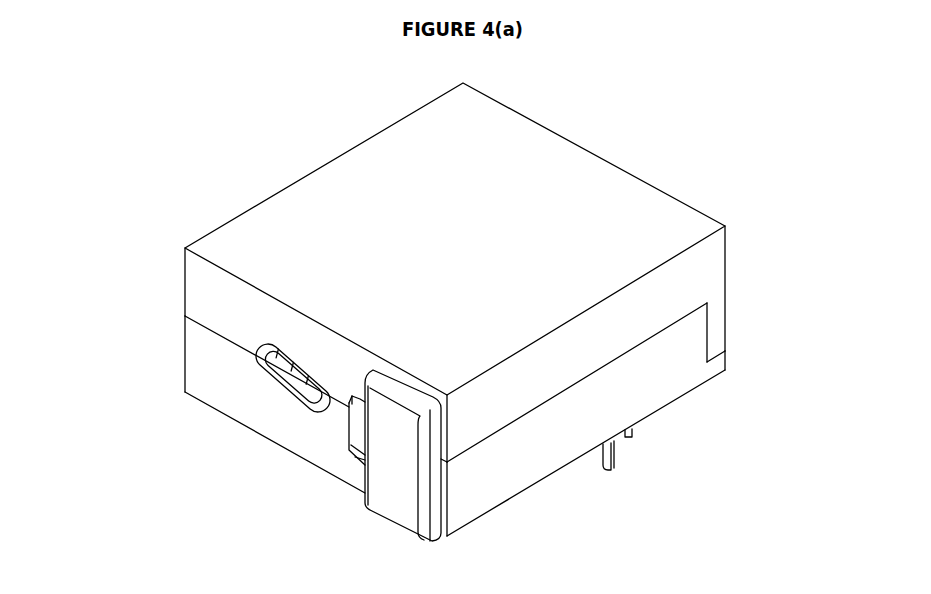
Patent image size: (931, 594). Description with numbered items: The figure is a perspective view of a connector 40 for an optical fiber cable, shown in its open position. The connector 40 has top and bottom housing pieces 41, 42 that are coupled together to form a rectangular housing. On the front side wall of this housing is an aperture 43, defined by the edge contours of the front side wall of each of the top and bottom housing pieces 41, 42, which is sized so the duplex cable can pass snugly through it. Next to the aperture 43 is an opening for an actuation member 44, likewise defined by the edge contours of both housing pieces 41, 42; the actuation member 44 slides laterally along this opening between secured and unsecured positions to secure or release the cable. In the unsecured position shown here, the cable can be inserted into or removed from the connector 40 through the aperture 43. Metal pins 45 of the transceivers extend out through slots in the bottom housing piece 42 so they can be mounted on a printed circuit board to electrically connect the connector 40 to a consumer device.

The connector 40 is at (108, 118).
The top housing piece 41 is at (353, 208).
The bottom housing piece 42 is at (660, 362).
The aperture 43 is at (308, 387).
The actuation member 44 is at (390, 463).
The metal pins 45 is at (617, 460).